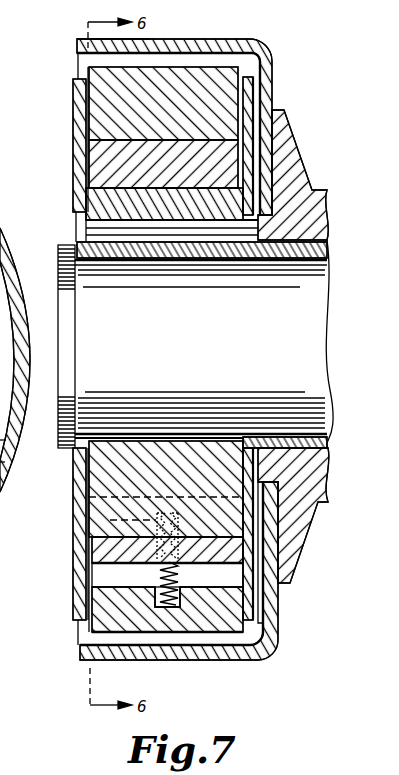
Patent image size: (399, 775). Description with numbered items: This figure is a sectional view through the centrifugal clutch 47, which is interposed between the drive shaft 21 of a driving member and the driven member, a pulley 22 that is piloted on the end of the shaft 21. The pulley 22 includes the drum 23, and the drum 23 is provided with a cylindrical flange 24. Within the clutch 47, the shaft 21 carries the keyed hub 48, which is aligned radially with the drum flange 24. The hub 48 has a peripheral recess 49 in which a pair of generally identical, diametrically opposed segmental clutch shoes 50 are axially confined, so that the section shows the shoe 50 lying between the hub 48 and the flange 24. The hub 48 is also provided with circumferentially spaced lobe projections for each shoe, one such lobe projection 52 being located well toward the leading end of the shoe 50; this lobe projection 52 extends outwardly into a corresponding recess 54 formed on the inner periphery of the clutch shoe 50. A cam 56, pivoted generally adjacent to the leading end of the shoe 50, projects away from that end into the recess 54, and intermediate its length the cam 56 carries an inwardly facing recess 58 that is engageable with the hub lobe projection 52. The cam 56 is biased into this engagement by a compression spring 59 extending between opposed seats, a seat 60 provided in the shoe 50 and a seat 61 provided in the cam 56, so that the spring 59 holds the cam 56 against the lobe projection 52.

The shaft 21 is at (220, 350).
The pulley 22 is at (291, 137).
The drum 23 is at (276, 52).
The cylindrical flange 24 is at (77, 42).
The clutch 47 is at (63, 80).
The keyed hub 48 is at (100, 208).
The peripheral recess 49 is at (92, 107).
The segmental clutch shoes 50 is at (110, 125).
The lobe projection 52 is at (107, 520).
The recess 54 is at (123, 585).
The cam 56 is at (108, 150).
The inwardly facing recess 58 is at (91, 554).
The compression spring 59 is at (182, 581).
The seat 60 is at (168, 605).
The seat 61 is at (70, 505).